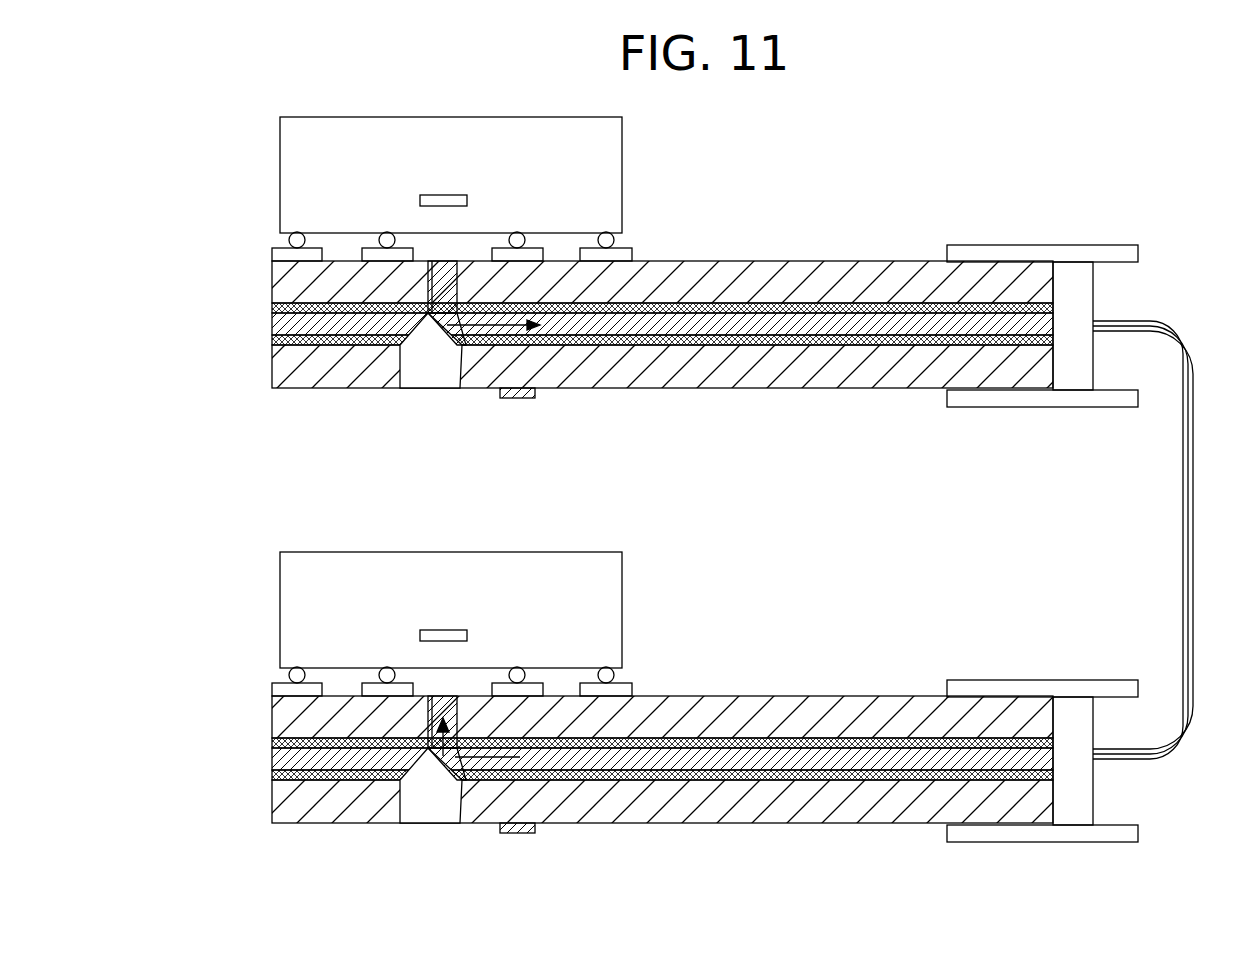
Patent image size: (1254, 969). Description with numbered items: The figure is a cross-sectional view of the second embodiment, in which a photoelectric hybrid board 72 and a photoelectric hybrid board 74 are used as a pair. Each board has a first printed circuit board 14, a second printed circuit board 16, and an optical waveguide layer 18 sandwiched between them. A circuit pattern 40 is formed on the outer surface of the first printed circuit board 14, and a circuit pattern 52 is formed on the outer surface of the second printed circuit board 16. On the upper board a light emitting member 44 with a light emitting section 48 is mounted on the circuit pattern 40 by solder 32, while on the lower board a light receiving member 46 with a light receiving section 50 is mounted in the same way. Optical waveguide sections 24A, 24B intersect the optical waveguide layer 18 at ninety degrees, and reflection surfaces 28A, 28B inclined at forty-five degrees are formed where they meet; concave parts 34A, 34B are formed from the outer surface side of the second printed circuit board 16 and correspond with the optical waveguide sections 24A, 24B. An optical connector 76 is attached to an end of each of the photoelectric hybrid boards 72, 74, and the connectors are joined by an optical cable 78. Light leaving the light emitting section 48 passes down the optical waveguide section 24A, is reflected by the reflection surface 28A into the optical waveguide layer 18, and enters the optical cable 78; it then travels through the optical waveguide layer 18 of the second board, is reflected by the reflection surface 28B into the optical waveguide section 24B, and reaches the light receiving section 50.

The first printed circuit board 14 is at (271, 270).
The second printed circuit board 16 is at (271, 362).
The optical waveguide layer 18 is at (271, 318).
The optical waveguide section 24A is at (452, 255).
The optical waveguide section 24B is at (452, 690).
The reflection surface 28A is at (445, 350).
The reflection surface 28B is at (445, 785).
The solder 32 is at (300, 231).
The concave part 34A is at (415, 397).
The concave part 34B is at (415, 832).
The circuit pattern 40 is at (280, 247).
The light emitting member 44 is at (625, 162).
The light receiving member 46 is at (625, 586).
The light emitting section 48 is at (443, 194).
The light receiving section 50 is at (443, 629).
The circuit pattern 52 is at (517, 400).
The photoelectric hybrid board 72 is at (297, 405).
The photoelectric hybrid board 74 is at (297, 841).
The optical connector 76 is at (1076, 243).
The optical cable 78 is at (1181, 544).